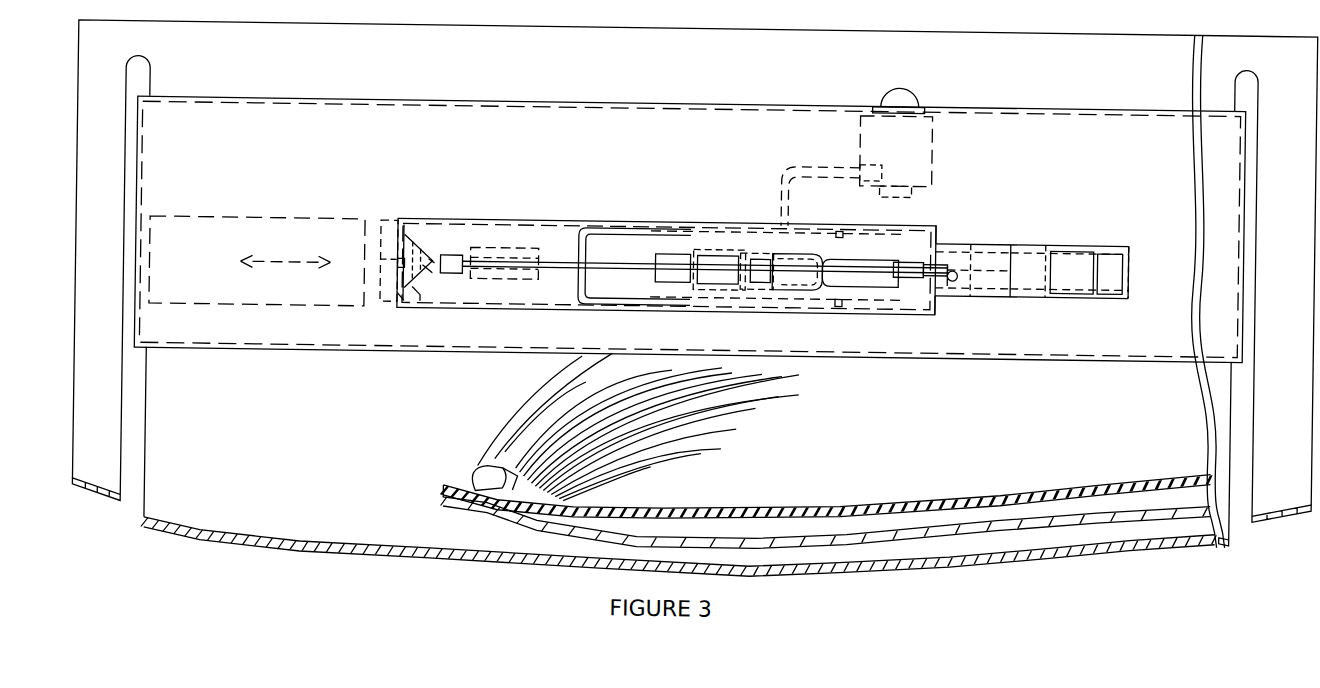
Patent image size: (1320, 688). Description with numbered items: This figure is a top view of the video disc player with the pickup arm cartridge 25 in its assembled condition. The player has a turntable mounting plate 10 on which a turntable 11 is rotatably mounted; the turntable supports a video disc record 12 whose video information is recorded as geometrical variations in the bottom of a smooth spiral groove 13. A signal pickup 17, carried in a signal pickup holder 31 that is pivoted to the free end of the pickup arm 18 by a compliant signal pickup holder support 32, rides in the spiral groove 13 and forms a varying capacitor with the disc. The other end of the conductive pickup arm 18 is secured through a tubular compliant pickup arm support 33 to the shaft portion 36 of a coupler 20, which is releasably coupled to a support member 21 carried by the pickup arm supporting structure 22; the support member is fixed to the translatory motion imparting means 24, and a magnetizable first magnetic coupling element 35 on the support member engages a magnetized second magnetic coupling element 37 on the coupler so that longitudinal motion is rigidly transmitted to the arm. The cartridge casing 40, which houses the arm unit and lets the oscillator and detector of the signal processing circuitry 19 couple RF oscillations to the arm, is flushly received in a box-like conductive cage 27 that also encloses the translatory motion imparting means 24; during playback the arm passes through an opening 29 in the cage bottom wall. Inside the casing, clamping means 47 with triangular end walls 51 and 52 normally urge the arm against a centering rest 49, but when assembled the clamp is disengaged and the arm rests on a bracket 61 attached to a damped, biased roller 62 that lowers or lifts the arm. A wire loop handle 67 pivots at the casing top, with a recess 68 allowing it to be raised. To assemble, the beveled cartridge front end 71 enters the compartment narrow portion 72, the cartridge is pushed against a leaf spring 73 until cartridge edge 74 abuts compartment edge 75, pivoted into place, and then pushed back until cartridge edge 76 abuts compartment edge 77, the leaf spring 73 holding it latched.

The turntable mounting plate 10 is at (75, 243).
The turntable 11 is at (447, 484).
The video disc record 12 is at (510, 458).
The spiral groove 13 is at (612, 446).
The signal pickup 17 is at (951, 278).
The pickup arm 18 is at (800, 288).
The signal processing circuitry 19 is at (486, 132).
The coupler 20 is at (417, 236).
The support member 21 is at (388, 238).
The pickup arm supporting structure 22 is at (96, 111).
The translatory motion imparting means 24 is at (207, 237).
The pickup arm cartridge 25 is at (485, 238).
The box-like conductive cage 27 is at (640, 95).
The opening 29 is at (852, 284).
The signal pickup holder 31 is at (940, 261).
The compliant signal pickup holder support 32 is at (908, 258).
The compliant pickup arm support 33 is at (447, 256).
The first magnetic coupling element 35 is at (398, 266).
The shaft portion 36 is at (428, 268).
The second magnetic coupling element 37 is at (426, 273).
The casing 40 is at (543, 221).
The clamping means 47 is at (704, 238).
The centering rest 49 is at (670, 282).
The triangular end wall 51 is at (715, 283).
The triangular end wall 52 is at (718, 258).
The bracket 61 is at (820, 165).
The roller 62 is at (858, 133).
The wire loop handle 67 is at (581, 228).
The recess 68 is at (563, 281).
The cartridge front end 71 is at (1050, 252).
The compartment narrow portion 72 is at (950, 292).
The leaf spring 73 is at (1112, 258).
The cartridge edge 74 is at (968, 250).
The compartment edge 75 is at (1016, 258).
The cartridge edge 76 is at (420, 298).
The compartment edge 77 is at (397, 297).